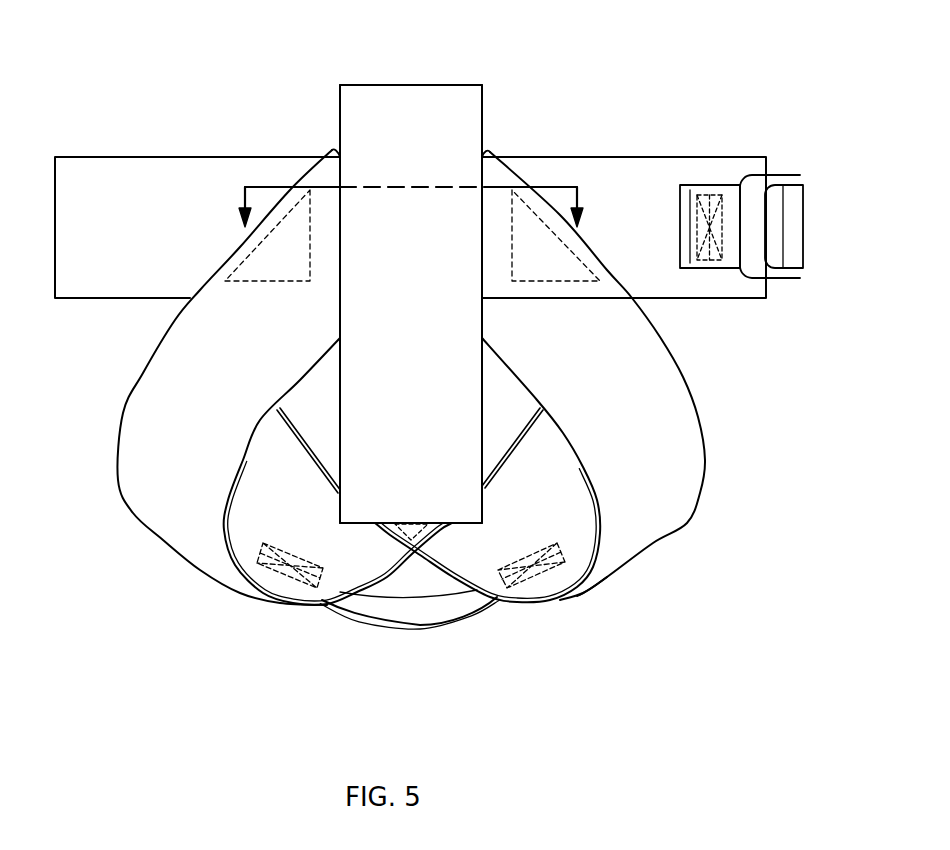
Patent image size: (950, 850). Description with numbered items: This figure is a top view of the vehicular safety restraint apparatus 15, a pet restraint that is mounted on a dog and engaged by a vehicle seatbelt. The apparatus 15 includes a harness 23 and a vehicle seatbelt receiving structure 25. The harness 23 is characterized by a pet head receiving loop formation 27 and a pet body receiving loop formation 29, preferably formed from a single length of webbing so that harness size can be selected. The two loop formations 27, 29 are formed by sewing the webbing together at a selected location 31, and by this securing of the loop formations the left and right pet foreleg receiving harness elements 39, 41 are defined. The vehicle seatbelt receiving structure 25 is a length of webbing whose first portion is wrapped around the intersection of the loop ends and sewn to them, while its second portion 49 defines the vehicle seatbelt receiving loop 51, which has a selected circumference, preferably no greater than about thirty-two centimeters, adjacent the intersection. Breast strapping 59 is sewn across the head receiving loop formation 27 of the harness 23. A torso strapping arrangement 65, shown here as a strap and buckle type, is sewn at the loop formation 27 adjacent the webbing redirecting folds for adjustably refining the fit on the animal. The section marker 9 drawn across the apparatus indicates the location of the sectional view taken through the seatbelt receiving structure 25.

The vehicular safety restraint apparatus 15 is at (227, 638).
The harness 23 is at (670, 475).
The vehicle seatbelt receiving structure 25 is at (445, 85).
The pet head receiving loop formation 27 is at (577, 596).
The pet body receiving loop formation 29 is at (133, 182).
The selected location 31 is at (404, 530).
The left pet foreleg receiving harness element 39 is at (483, 477).
The right pet foreleg receiving harness element 41 is at (335, 487).
The second portion 49 is at (367, 130).
The vehicle seatbelt receiving loop 51 is at (450, 135).
The breast strapping 59 is at (447, 608).
The torso strapping arrangement 65 is at (792, 200).
The section line for FIG. 9 is at (409, 209).